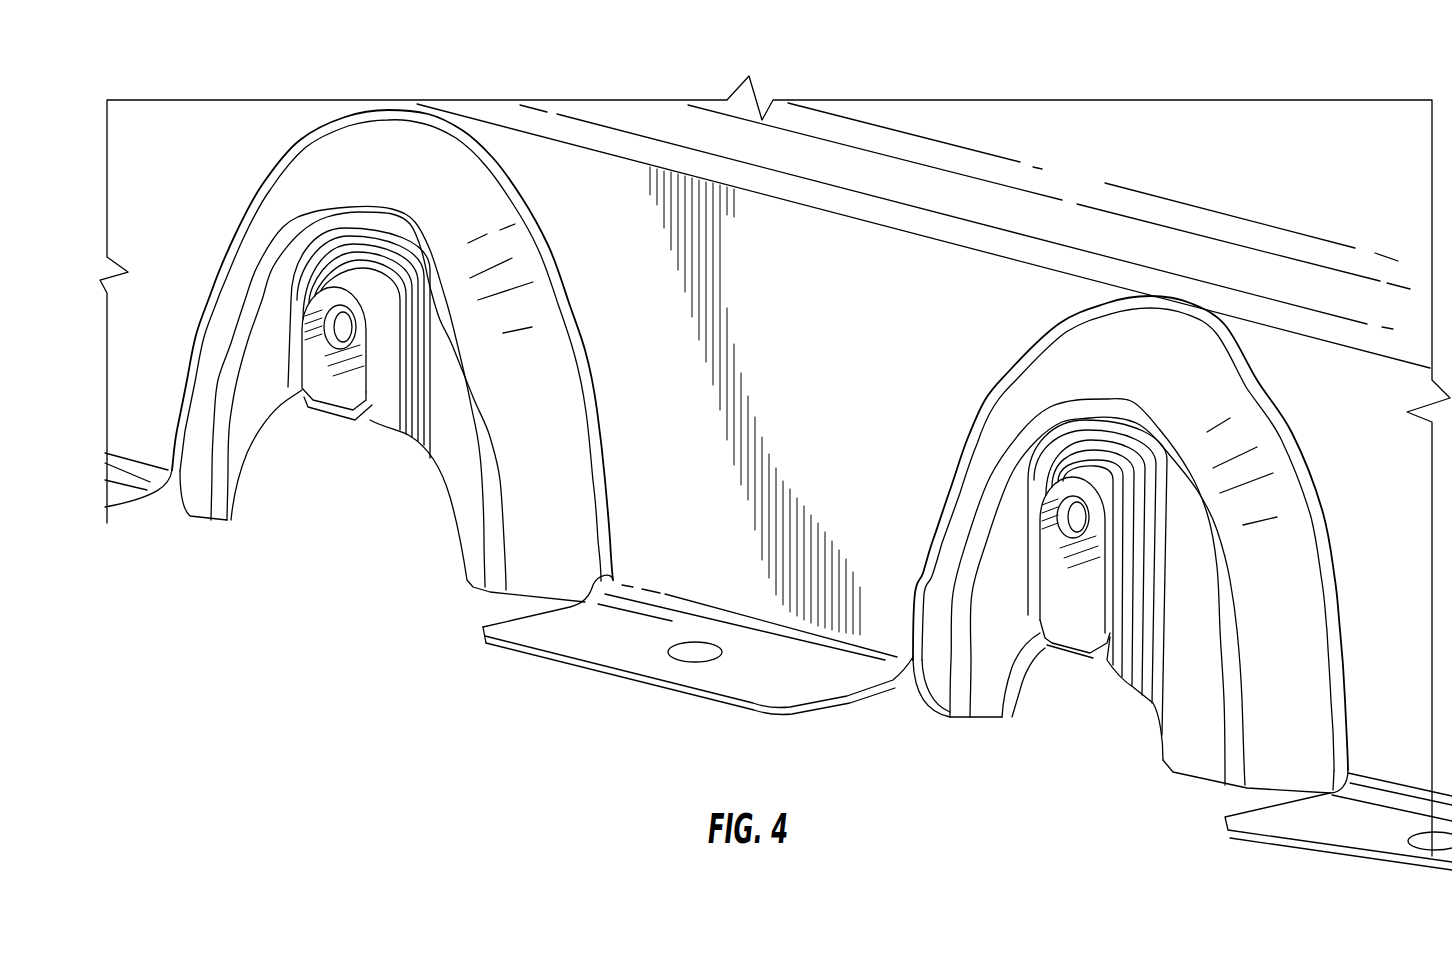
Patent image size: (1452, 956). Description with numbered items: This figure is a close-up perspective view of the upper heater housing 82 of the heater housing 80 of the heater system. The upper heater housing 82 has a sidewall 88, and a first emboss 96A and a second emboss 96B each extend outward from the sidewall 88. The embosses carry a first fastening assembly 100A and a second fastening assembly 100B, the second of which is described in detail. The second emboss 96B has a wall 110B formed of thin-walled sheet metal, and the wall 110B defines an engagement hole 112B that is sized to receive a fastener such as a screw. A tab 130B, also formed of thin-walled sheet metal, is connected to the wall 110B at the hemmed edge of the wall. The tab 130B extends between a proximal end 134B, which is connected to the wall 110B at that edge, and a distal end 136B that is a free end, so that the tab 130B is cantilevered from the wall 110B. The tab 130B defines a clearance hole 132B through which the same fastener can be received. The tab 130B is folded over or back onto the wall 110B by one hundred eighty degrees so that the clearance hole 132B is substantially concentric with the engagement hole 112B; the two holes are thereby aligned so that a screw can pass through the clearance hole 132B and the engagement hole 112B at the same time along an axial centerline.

The heater housing 80 is at (600, 60).
The upper heater housing 82 is at (1137, 128).
The sidewall 88 is at (815, 458).
The first emboss 96A is at (320, 172).
The second emboss 96B is at (1040, 372).
The first fastening assembly 100A is at (302, 525).
The second fastening assembly 100B is at (1048, 770).
The wall 110B is at (1048, 470).
The engagement hole 112B is at (1075, 518).
The tab 130B is at (1068, 612).
The clearance hole 132B is at (1060, 538).
The proximal end 134B is at (1043, 657).
The distal end 136B is at (1103, 485).